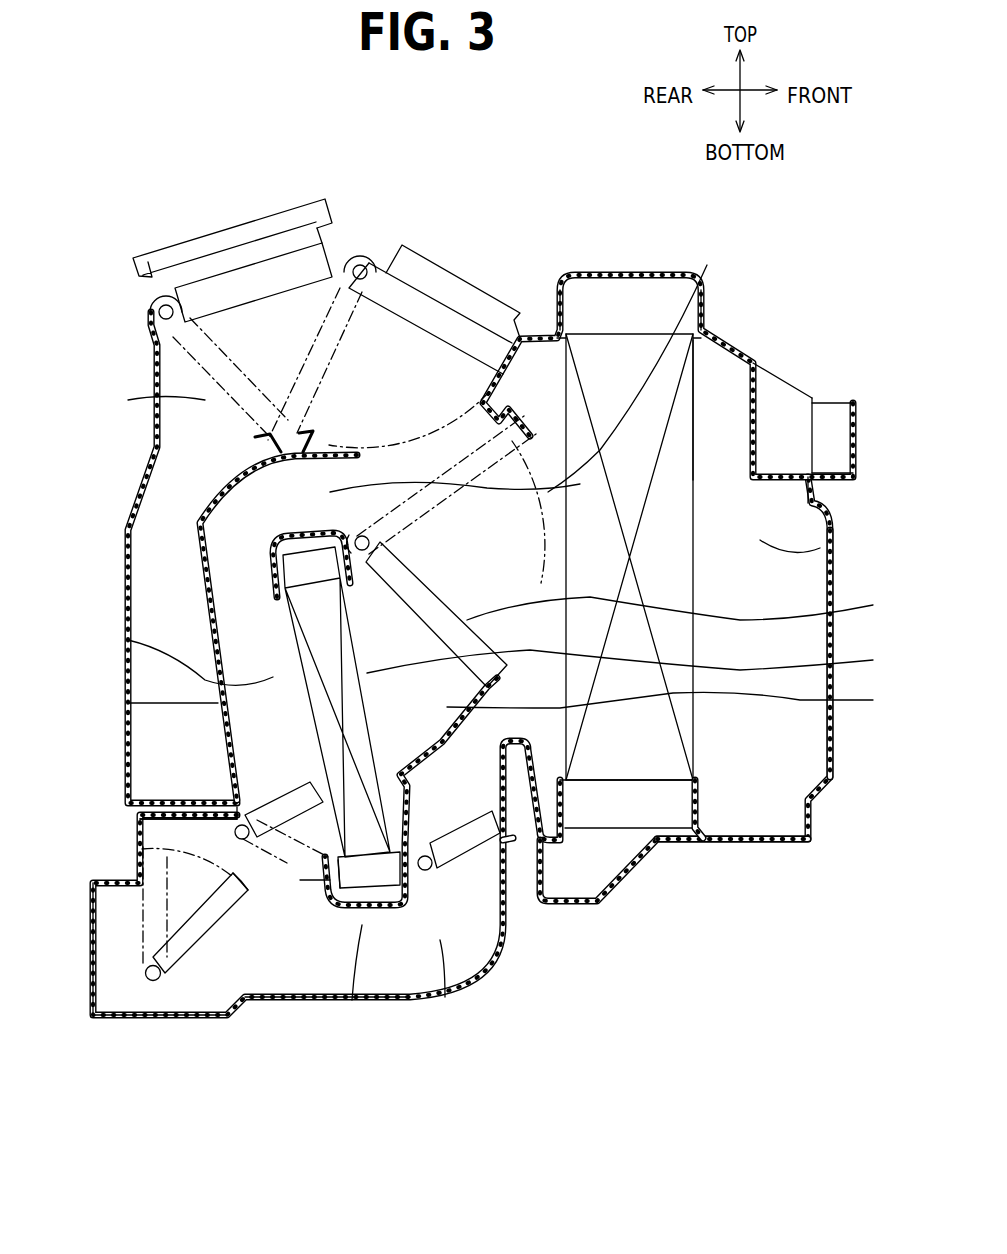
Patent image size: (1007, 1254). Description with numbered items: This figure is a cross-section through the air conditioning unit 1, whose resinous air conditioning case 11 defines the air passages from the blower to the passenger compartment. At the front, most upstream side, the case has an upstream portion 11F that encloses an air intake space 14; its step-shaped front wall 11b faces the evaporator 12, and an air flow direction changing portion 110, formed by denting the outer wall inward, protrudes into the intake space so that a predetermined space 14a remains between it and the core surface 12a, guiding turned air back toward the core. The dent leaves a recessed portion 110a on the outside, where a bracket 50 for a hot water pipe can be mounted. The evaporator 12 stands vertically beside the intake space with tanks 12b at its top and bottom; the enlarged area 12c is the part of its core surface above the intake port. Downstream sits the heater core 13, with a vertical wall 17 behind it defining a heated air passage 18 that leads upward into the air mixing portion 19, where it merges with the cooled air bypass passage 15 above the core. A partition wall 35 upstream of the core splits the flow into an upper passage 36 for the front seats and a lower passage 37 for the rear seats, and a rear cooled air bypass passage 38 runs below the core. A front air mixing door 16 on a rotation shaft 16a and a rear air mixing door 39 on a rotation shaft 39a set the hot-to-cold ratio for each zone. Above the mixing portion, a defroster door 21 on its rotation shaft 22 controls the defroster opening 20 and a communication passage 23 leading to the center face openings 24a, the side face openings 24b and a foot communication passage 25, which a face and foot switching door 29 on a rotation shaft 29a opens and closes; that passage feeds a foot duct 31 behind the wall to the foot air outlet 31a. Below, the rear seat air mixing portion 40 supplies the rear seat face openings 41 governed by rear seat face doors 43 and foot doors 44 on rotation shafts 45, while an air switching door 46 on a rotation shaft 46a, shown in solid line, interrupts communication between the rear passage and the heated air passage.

The air conditioning unit 1 is at (495, 587).
The air conditioning case 11 is at (473, 612).
The front wall 11b is at (836, 580).
The upstream portion 11F is at (770, 845).
The evaporator 12 is at (665, 582).
The core surface 12a is at (693, 722).
The tanks 12b is at (593, 310).
The enlarged area 12c is at (700, 390).
The heater core 13 is at (307, 862).
The air intake space 14 is at (790, 552).
The predetermined space 14a is at (812, 503).
The cooled air bypass passage 15 is at (640, 370).
The front air mixing door 16 is at (676, 613).
The rotation shaft 16a is at (270, 546).
The wall 17 is at (192, 610).
The heated air passage 18 is at (273, 677).
The air mixing portion 19 is at (300, 486).
The defroster opening 20 is at (427, 273).
The defroster door 21 is at (443, 317).
The rotation shaft 22 is at (363, 257).
The communication passage 23 is at (330, 293).
The center face openings 24a is at (225, 229).
The side face openings 24b is at (319, 235).
The foot communication passage 25 is at (213, 397).
The face and foot switching door 29 is at (202, 290).
The rotation shaft 29a is at (159, 313).
The foot duct 31 is at (197, 663).
The foot air outlet 31a is at (140, 808).
The partition wall 35 is at (666, 701).
The upper passage 36 is at (626, 667).
The lower passage 37 is at (358, 865).
The cooled air bypass passage 38 is at (410, 943).
The rear air mixing door 39 is at (466, 946).
The rotation shaft 39a is at (437, 870).
The rear seat air mixing portion 40 is at (253, 927).
The rear seat face openings 41 is at (133, 974).
The rear seat face doors 43 is at (197, 956).
The foot doors 44 is at (240, 881).
The rotation shafts 45 is at (147, 982).
The air switching door 46 is at (273, 777).
The rotation shaft 46a is at (143, 777).
The bracket 50 is at (867, 423).
The air flow direction changing portion 110 is at (760, 437).
The recessed portion 110a is at (762, 437).